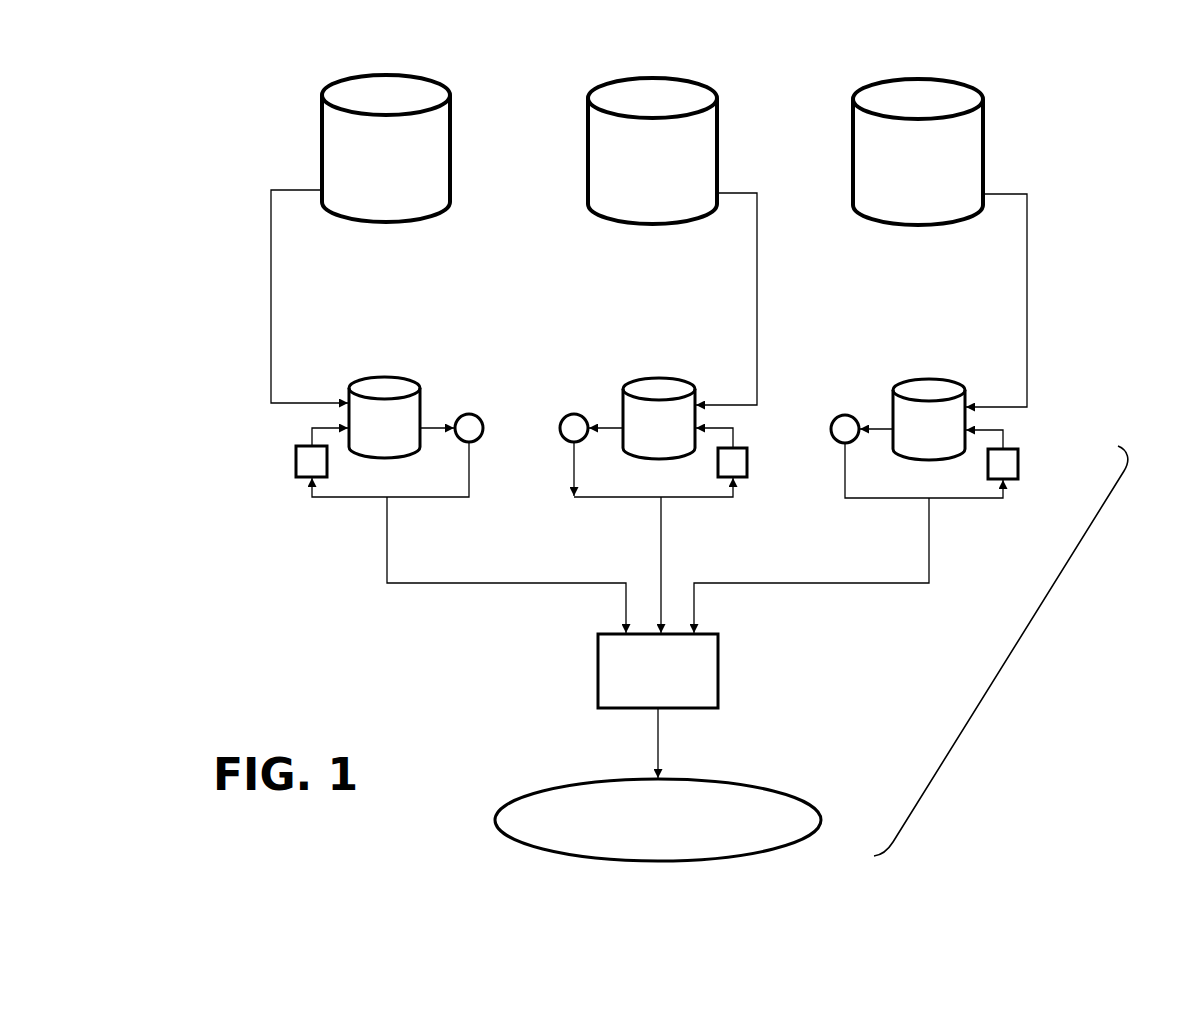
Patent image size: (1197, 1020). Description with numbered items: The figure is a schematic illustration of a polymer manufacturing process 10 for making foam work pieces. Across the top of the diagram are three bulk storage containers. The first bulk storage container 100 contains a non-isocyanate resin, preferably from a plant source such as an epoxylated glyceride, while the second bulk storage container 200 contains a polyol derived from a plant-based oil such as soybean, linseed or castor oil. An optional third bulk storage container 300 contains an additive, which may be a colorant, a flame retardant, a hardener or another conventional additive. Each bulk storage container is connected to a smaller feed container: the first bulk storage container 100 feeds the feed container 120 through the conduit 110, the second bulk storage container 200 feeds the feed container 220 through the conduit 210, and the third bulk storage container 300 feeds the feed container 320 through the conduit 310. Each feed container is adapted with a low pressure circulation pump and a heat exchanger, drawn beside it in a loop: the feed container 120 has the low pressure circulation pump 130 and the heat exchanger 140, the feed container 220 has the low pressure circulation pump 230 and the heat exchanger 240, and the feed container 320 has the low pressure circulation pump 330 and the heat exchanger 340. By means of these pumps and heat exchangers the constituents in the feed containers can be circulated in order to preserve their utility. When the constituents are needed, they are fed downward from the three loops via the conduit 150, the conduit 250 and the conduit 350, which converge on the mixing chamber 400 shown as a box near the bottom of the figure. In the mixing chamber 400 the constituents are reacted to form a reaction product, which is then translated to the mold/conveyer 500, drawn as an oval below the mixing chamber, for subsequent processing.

The polymer manufacturing process 10 is at (1004, 657).
The first bulk storage container 100 is at (340, 143).
The conduit 110 is at (271, 300).
The feed container 120 is at (370, 388).
The low pressure circulation pump 130 is at (476, 415).
The heat exchanger 140 is at (296, 468).
The conduit 150 is at (387, 548).
The second bulk storage container 200 is at (677, 78).
The conduit 210 is at (757, 316).
The feed container 220 is at (667, 390).
The low pressure circulation pump 230 is at (576, 415).
The heat exchanger 240 is at (747, 463).
The conduit 250 is at (660, 564).
The third bulk storage container 300 is at (973, 80).
The conduit 310 is at (1027, 260).
The feed container 320 is at (945, 388).
The low pressure circulation pump 330 is at (848, 413).
The heat exchanger 340 is at (1019, 459).
The conduit 350 is at (929, 528).
The mixing chamber 400 is at (719, 677).
The mold/conveyer 500 is at (748, 840).